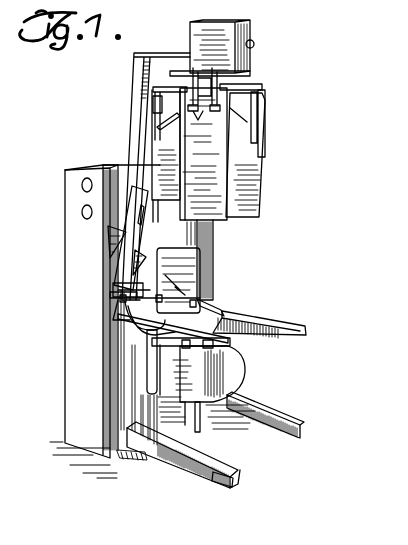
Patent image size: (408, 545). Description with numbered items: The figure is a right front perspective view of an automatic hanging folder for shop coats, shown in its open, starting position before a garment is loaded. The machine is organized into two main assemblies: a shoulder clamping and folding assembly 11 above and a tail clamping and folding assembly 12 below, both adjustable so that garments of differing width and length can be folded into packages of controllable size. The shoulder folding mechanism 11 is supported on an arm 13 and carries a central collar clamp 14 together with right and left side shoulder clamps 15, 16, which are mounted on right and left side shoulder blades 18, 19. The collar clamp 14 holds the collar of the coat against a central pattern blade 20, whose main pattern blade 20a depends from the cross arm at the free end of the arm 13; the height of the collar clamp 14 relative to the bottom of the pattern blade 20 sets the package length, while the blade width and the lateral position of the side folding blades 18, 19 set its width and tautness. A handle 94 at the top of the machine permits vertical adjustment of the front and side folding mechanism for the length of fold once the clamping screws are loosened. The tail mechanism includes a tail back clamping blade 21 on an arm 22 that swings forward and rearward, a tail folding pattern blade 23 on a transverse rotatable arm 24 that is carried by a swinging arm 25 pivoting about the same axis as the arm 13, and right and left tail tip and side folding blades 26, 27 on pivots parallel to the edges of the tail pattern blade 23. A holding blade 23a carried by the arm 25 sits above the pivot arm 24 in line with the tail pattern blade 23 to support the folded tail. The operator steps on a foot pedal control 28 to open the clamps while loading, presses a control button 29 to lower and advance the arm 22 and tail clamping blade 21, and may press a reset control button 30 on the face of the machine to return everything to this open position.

The shoulder clamping and folding assembly 11 is at (272, 72).
The tail clamping and folding assembly 12 is at (258, 379).
The arm 13 is at (143, 71).
The collar clamp 14 is at (211, 114).
The right side shoulder clamp 15 is at (268, 115).
The left side shoulder clamp 16 is at (152, 100).
The right side shoulder blade 18 is at (256, 169).
The left side shoulder blade 19 is at (160, 153).
The pattern blade 20 is at (214, 224).
The main pattern blade 20a is at (214, 195).
The tail back clamping blade 21 is at (305, 335).
The arm 22 is at (218, 307).
The tail folding pattern blade 23 is at (197, 427).
The holding blade 23a is at (190, 270).
The transverse rotatable arm 24 is at (228, 341).
The swinging arm 25 is at (106, 224).
The right side tail tip and side folding blade 26 is at (205, 430).
The left side tail tip and side folding blade 27 is at (150, 364).
The foot pedal control 28 is at (186, 482).
The control button 29 is at (80, 184).
The reset control button 30 is at (80, 212).
The handle 94 is at (258, 40).